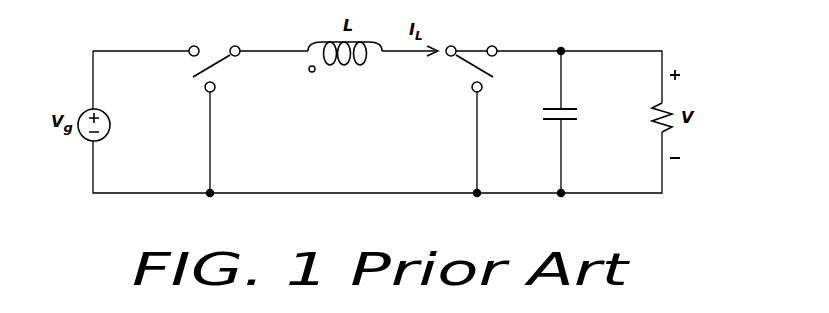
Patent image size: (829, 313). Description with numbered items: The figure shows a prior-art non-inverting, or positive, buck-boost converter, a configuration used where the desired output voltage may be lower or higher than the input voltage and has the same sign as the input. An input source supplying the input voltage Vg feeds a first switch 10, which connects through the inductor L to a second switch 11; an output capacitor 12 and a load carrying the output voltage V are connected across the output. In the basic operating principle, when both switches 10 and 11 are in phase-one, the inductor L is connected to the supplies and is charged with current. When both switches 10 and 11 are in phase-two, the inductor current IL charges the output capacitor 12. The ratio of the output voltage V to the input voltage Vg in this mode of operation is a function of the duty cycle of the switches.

The switch 10 is at (214, 57).
The switch 11 is at (475, 58).
The output capacitor 12 is at (567, 104).